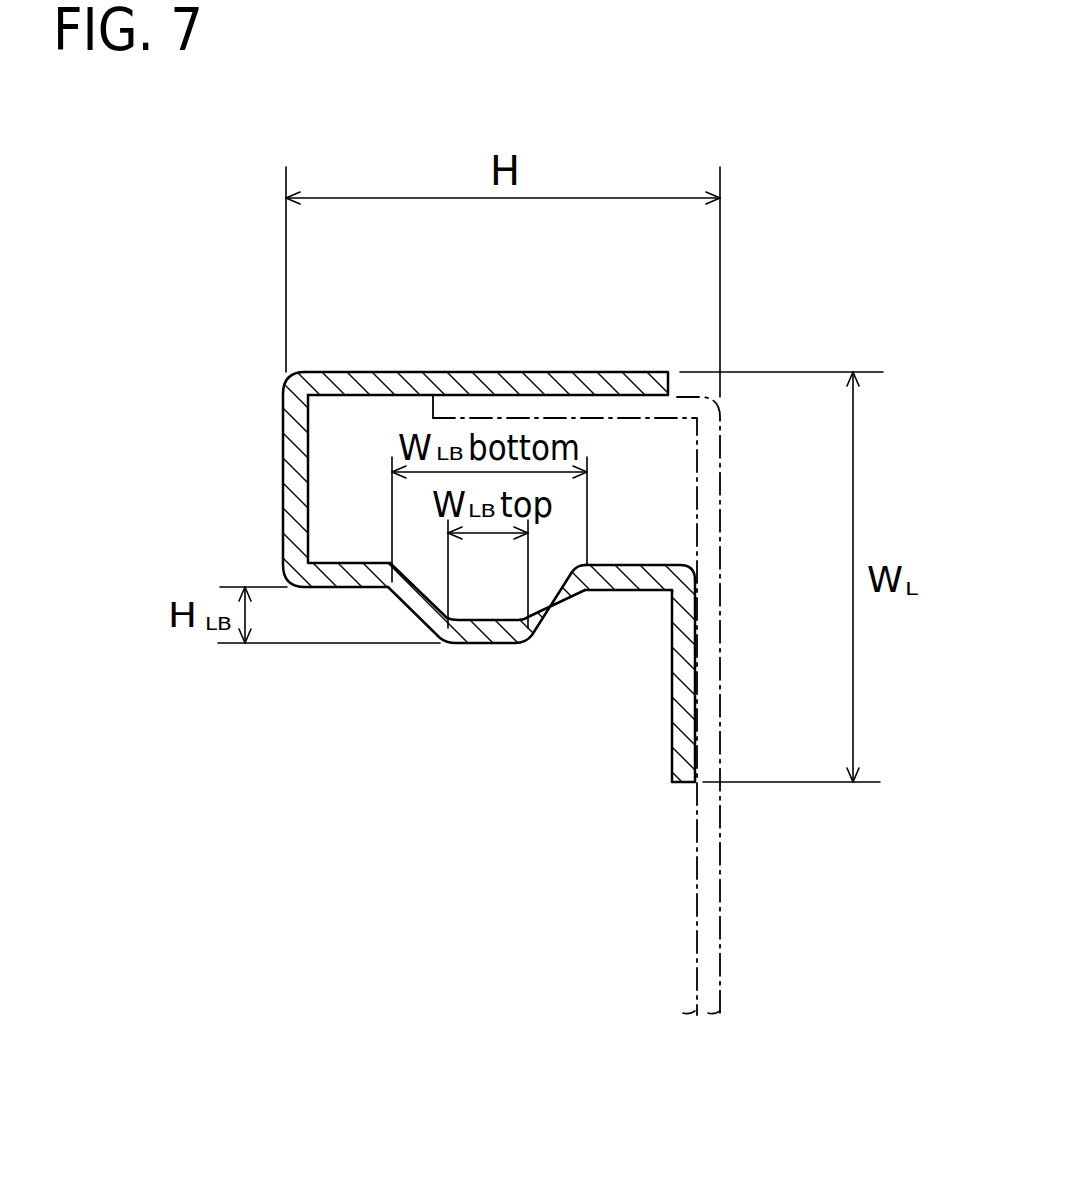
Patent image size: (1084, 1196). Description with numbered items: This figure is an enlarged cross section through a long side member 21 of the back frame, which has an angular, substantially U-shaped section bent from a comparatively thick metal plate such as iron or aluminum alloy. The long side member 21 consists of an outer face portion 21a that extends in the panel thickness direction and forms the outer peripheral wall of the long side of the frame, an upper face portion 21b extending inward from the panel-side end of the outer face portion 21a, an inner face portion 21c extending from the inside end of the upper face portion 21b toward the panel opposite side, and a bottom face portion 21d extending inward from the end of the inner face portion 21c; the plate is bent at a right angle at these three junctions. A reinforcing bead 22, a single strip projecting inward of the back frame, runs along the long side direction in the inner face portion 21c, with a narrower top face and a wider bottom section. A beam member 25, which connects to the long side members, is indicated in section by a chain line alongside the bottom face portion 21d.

The long side member 21 is at (178, 203).
The outer face portion 21a is at (503, 370).
The upper face portion 21b is at (283, 493).
The inner face portion 21c is at (605, 590).
The bottom face portion 21d is at (670, 758).
The reinforcing bead 22 is at (492, 647).
The beam member 25 is at (717, 903).